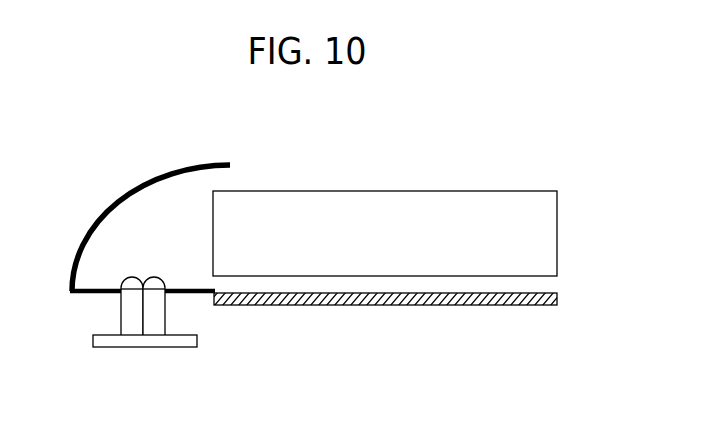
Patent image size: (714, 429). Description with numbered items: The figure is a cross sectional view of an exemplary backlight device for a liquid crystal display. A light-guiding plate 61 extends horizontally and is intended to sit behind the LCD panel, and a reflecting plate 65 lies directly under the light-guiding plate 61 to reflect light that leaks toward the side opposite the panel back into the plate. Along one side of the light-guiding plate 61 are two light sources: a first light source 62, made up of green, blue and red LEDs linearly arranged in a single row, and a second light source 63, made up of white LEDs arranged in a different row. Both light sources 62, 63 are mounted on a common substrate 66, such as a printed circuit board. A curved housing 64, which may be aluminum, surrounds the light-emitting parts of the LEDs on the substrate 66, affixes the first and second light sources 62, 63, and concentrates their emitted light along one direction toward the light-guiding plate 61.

The light-guiding plate 61 is at (552, 230).
The first light source 62 is at (128, 313).
The second light source 63 is at (160, 313).
The housing 64 is at (102, 211).
The reflecting plate 65 is at (557, 297).
The common substrate 66 is at (155, 347).